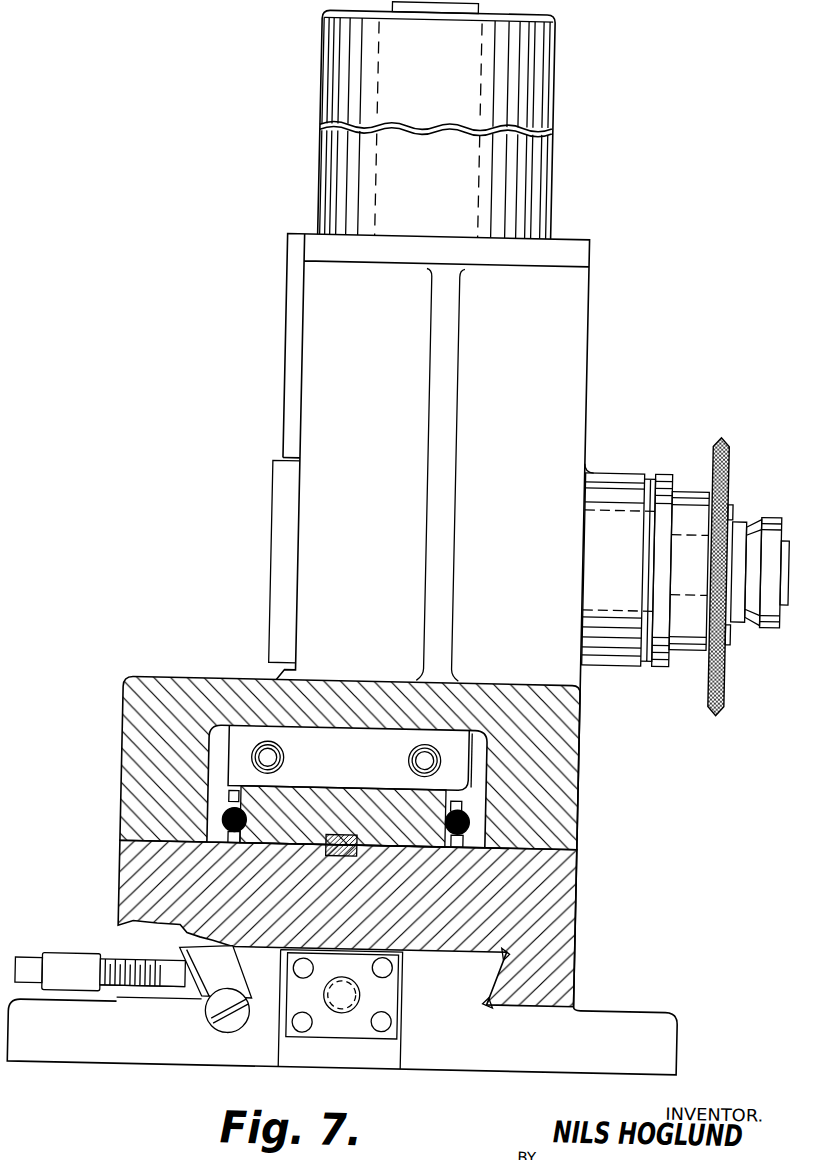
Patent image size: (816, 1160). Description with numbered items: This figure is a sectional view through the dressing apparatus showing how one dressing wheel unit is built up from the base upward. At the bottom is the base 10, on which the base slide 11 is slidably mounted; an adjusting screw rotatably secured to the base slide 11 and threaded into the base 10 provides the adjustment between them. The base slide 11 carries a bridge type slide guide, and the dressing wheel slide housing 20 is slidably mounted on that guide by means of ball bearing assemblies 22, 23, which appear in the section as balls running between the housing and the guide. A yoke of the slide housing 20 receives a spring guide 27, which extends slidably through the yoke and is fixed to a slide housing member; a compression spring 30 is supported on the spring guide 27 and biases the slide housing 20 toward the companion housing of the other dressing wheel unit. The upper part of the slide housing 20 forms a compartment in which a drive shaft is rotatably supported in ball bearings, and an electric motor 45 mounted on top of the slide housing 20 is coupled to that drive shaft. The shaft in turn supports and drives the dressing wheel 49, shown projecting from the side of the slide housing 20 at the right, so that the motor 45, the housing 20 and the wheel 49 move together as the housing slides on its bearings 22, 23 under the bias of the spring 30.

The base 10 is at (626, 1020).
The base slide 11 is at (564, 772).
The dressing wheel slide housing 20 is at (560, 354).
The ball bearing assembly 22 is at (238, 808).
The ball bearing assembly 23 is at (348, 804).
The spring guide 27 is at (276, 756).
The compression spring 30 is at (285, 770).
The electric motor 45 is at (326, 71).
The dressing wheel 49 is at (724, 466).